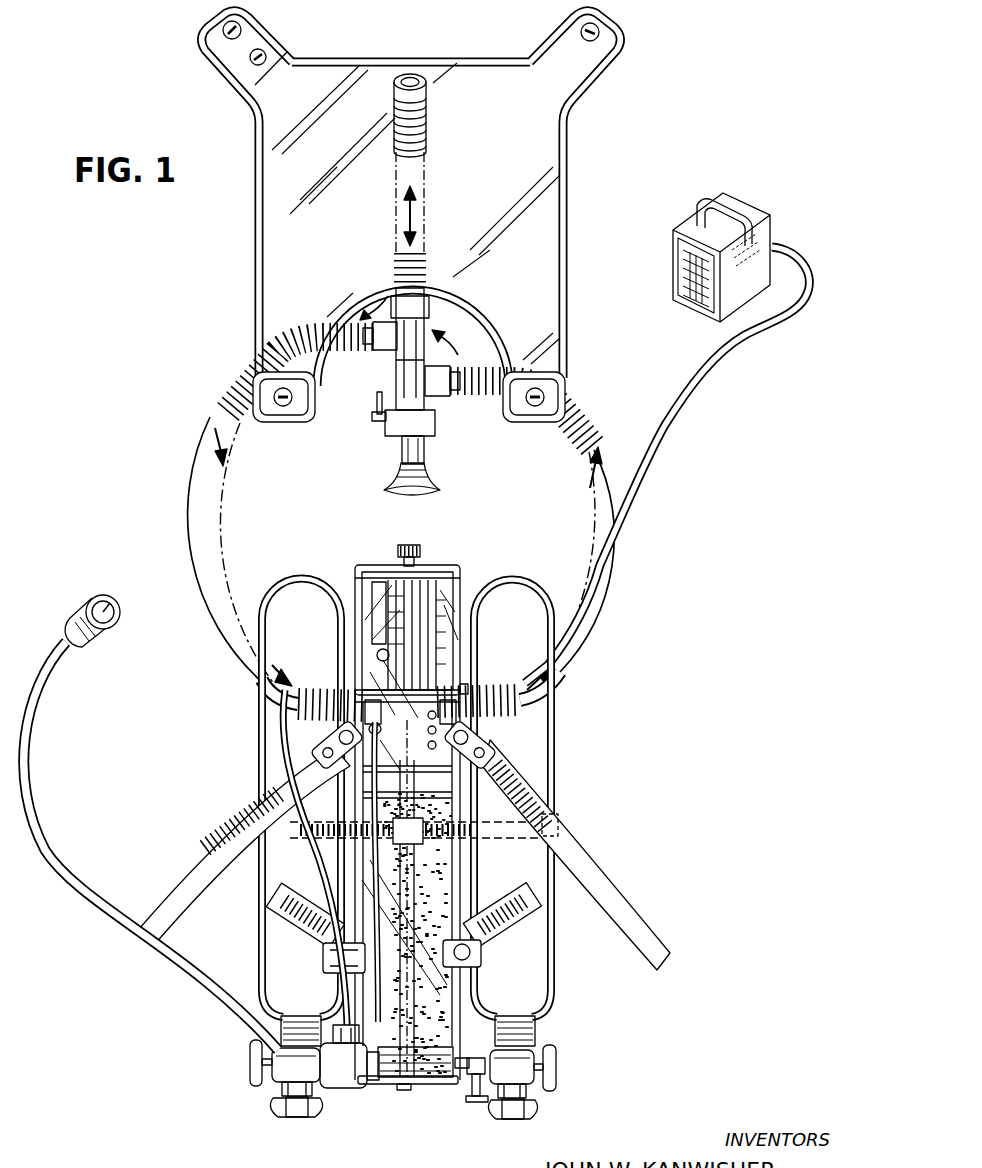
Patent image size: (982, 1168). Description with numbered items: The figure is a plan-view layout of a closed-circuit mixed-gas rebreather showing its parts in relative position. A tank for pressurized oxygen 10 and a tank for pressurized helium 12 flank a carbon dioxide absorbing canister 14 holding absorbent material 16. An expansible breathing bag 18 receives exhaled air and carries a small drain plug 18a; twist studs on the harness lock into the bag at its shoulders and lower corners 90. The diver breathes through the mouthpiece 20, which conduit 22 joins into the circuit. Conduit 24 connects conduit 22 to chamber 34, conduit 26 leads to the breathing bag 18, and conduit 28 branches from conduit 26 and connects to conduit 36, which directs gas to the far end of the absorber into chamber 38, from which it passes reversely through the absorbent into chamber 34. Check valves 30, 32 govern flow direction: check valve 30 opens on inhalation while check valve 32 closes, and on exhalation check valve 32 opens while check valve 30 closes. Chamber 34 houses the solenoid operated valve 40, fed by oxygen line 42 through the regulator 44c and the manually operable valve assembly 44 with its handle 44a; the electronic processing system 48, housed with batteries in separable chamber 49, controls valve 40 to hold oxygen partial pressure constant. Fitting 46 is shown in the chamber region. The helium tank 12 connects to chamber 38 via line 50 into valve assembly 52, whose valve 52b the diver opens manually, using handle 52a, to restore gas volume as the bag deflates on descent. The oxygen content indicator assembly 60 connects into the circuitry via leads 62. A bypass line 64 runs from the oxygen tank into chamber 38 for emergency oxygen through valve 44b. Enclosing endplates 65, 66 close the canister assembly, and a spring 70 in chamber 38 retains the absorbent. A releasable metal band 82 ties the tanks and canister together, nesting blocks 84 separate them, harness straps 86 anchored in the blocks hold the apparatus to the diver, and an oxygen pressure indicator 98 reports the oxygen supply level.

The tank for pressurized oxygen 10 is at (262, 712).
The tank for pressurized helium 12 is at (546, 753).
The carbon dioxide absorbing canister 14 is at (433, 891).
The absorbent material 16 is at (440, 900).
The expansible breathing bag 18 is at (408, 196).
The plug 18a is at (264, 52).
The breathing mouthpiece 20 is at (408, 470).
The conduit 22 is at (415, 368).
The conduit 24 is at (578, 420).
The conduit 26 is at (428, 128).
The conduit 28 is at (236, 396).
The check valve 30 is at (437, 396).
The check valve 32 is at (418, 345).
The chamber 34 is at (456, 822).
The conduit 36 is at (366, 686).
The chamber 38 is at (437, 1082).
The solenoid operated valve 40 is at (410, 775).
The oxygen line 42 is at (286, 750).
The manually operable valve assembly 44 is at (284, 1084).
The valve handle 44a is at (252, 1042).
The valve 44b is at (378, 1084).
The regulator 44c is at (343, 1082).
The outlet fitting 46 is at (470, 748).
The electronic processing system 48 is at (417, 615).
The separable chamber 49 is at (374, 590).
The line 50 is at (462, 1058).
The valve assembly 52 is at (531, 1093).
The valve handle 52a is at (556, 1058).
The valve 52b is at (478, 1103).
The oxygen content indicator assembly 60 is at (730, 208).
The leads 62 is at (684, 411).
The bypass line 64 is at (381, 1000).
The endplate 65 is at (430, 570).
The endplate 66 is at (390, 1085).
The spring 70 is at (425, 1090).
The releasable metal band 82 is at (326, 842).
The nesting blocks 84 is at (330, 965).
The harness straps 86 is at (206, 856).
The lower corners 90 is at (228, 40).
The oxygen pressure indicator 98 is at (112, 608).